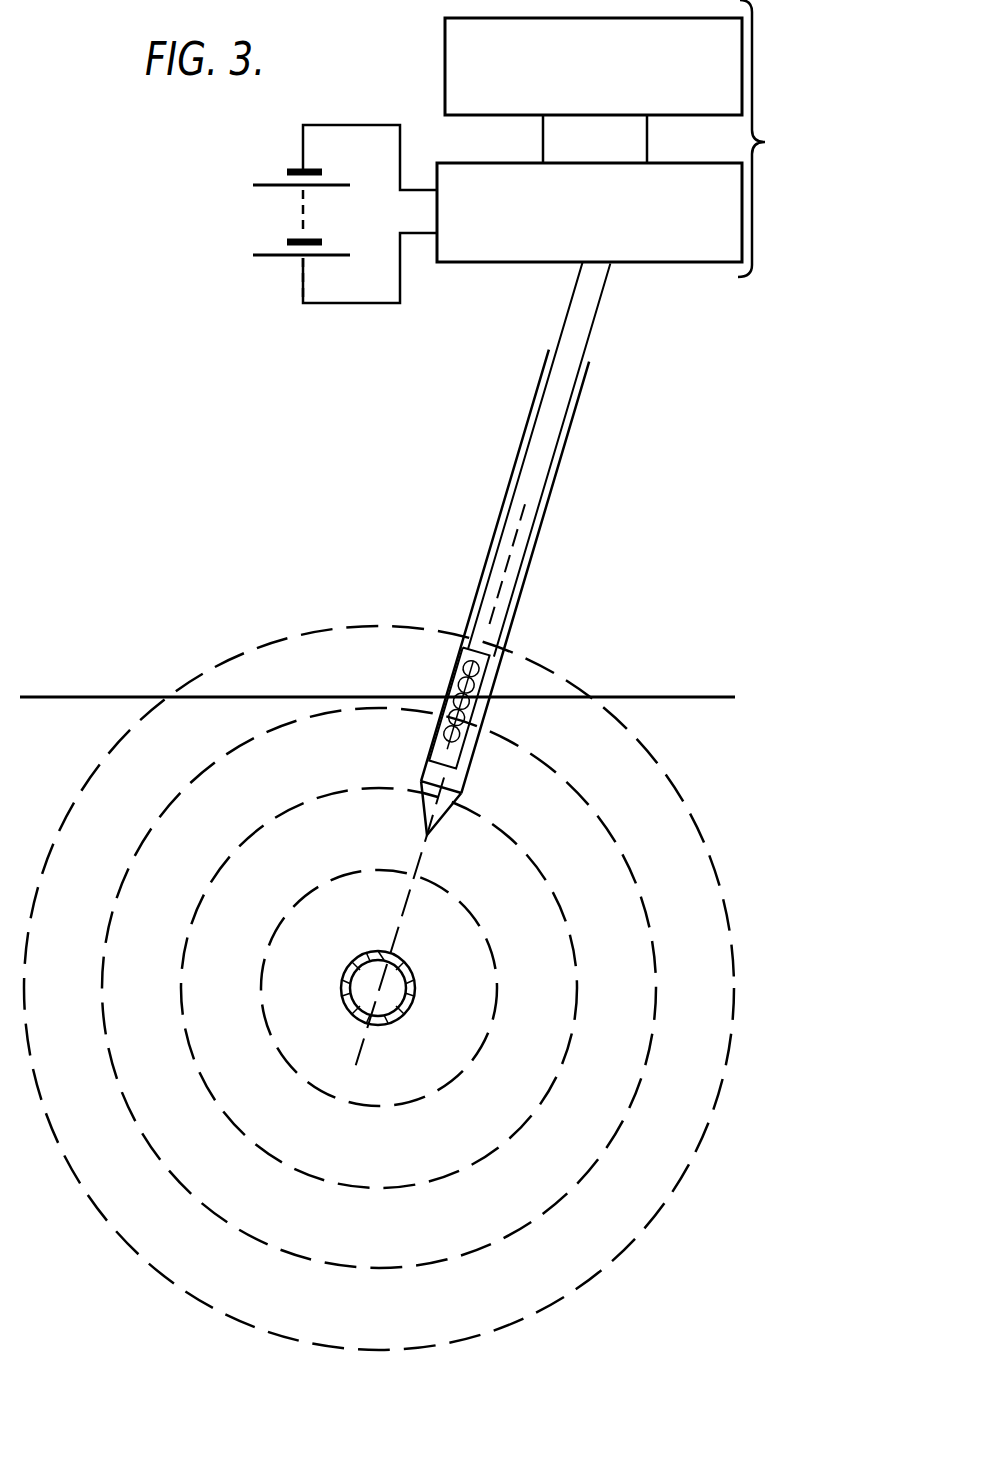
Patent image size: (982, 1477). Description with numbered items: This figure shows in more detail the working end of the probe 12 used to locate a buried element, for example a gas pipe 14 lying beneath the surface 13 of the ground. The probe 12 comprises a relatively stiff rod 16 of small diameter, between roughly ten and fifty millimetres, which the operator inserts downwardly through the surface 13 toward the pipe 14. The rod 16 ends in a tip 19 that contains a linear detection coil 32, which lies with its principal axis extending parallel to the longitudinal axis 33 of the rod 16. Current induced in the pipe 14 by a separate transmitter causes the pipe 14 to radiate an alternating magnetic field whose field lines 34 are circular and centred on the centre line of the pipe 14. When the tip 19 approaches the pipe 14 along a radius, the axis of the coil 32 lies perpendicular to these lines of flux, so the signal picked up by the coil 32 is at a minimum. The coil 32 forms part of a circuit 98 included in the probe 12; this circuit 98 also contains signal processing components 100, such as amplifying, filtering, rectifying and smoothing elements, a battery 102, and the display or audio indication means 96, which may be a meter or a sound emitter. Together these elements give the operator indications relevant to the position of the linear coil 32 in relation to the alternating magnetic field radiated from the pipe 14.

The probe 12 is at (474, 525).
The surface of the ground 13 is at (96, 696).
The buried pipe 14 is at (400, 1012).
The rod 16 is at (538, 460).
The tip 19 is at (418, 806).
The linear detection coil 32 is at (468, 748).
The longitudinal axis 33 is at (512, 582).
The magnetic field lines 34 is at (620, 1262).
The display or audio indication means 96 is at (445, 62).
The circuit 98 is at (680, 138).
The signal processing components 100 is at (533, 245).
The battery 102 is at (264, 185).